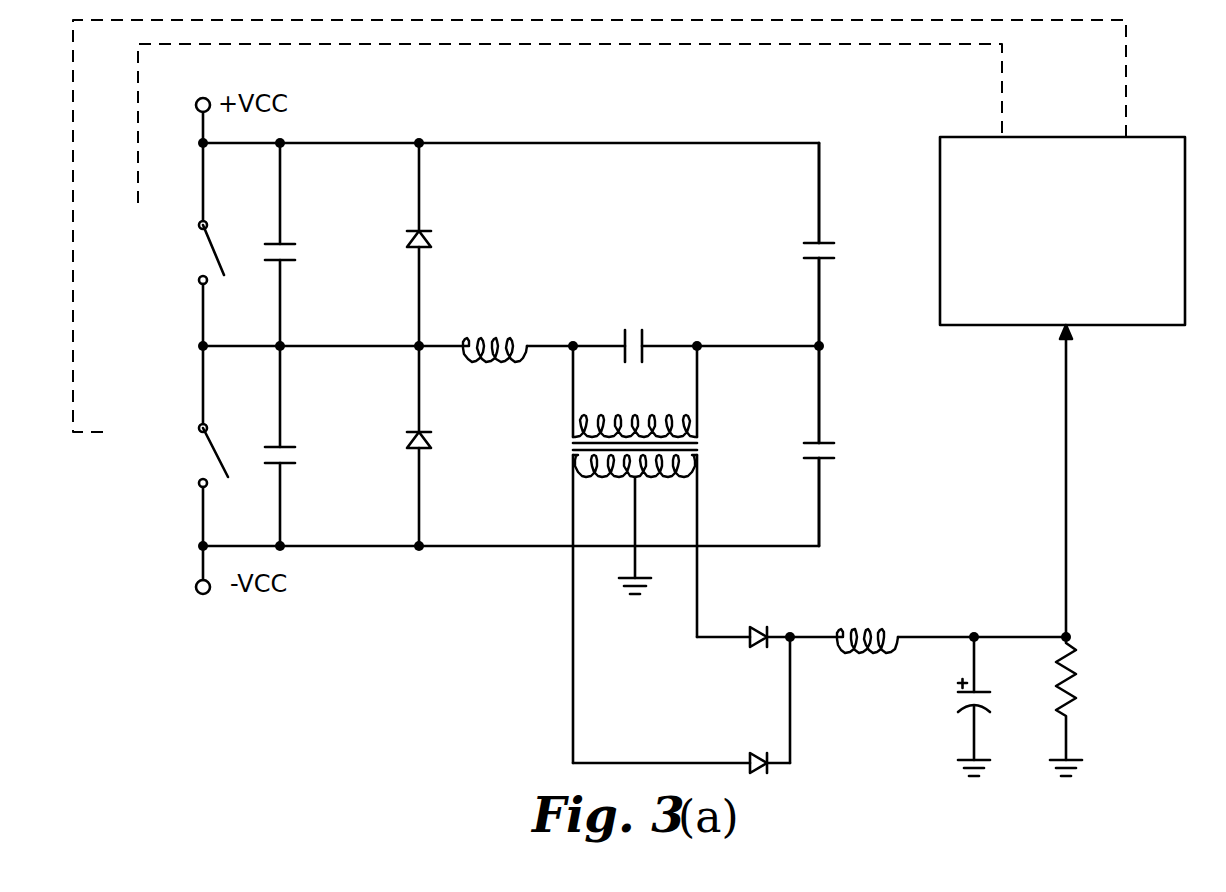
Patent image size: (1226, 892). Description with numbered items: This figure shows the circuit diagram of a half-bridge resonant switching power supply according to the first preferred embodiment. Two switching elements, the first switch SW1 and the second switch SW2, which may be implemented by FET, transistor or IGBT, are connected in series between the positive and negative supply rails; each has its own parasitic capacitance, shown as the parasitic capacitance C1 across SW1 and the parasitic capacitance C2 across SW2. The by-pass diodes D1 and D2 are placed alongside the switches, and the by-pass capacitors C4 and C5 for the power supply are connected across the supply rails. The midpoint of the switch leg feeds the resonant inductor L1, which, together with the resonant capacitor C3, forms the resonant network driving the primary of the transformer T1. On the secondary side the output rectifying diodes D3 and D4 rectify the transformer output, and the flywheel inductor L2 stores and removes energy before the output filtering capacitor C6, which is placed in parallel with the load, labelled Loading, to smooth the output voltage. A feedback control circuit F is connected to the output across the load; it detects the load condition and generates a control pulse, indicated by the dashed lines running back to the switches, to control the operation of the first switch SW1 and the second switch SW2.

The first switch SW1 is at (170, 244).
The second switch SW2 is at (170, 446).
The parasitic capacitance C1 is at (306, 244).
The parasitic capacitance C2 is at (306, 446).
The resonant capacitor C3 is at (635, 320).
The by-pass capacitor C4 is at (845, 244).
The by-pass capacitor C5 is at (850, 446).
The output filtering capacitor C6 is at (947, 706).
The by-pass diode D1 is at (446, 244).
The by-pass diode D2 is at (446, 446).
The output rectifying diode D3 is at (767, 615).
The output rectifying diode D4 is at (681, 705).
The resonant inductor L1 is at (518, 329).
The flywheel inductor L2 is at (951, 618).
The transformer T1 is at (658, 554).
The feedback control circuit F is at (1062, 387).
The load Loading is at (1124, 706).